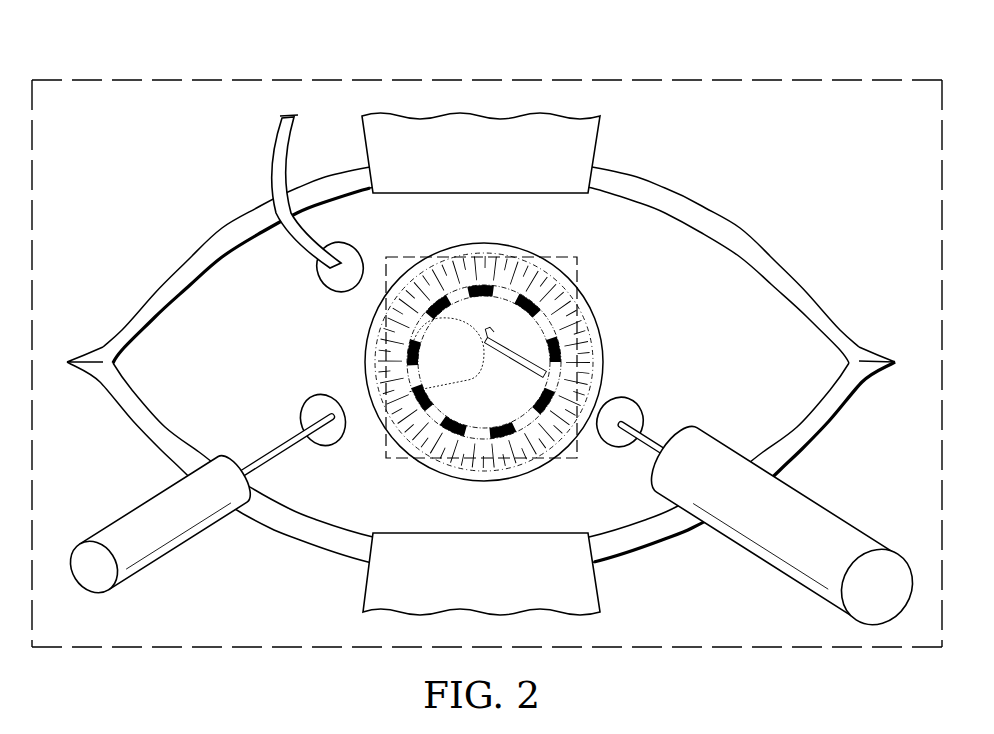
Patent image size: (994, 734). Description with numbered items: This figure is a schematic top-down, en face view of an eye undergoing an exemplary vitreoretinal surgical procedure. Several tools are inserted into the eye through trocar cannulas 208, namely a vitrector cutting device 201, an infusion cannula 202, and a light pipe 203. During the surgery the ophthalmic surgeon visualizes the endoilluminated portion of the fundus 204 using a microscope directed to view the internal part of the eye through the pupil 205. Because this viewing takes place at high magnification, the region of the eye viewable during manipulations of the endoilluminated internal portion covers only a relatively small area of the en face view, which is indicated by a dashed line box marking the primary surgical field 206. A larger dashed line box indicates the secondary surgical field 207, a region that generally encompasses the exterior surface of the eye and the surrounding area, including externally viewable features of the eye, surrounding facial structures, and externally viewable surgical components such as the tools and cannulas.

The vitrector cutting device 201 is at (773, 575).
The infusion cannula 202 is at (268, 163).
The light pipe 203 is at (181, 549).
The endoilluminated portion of the fundus 204 is at (432, 377).
The pupil 205 is at (400, 356).
The primary surgical field 206 is at (588, 283).
The secondary surgical field 207 is at (338, 76).
The trocar cannulas 208 is at (314, 275).